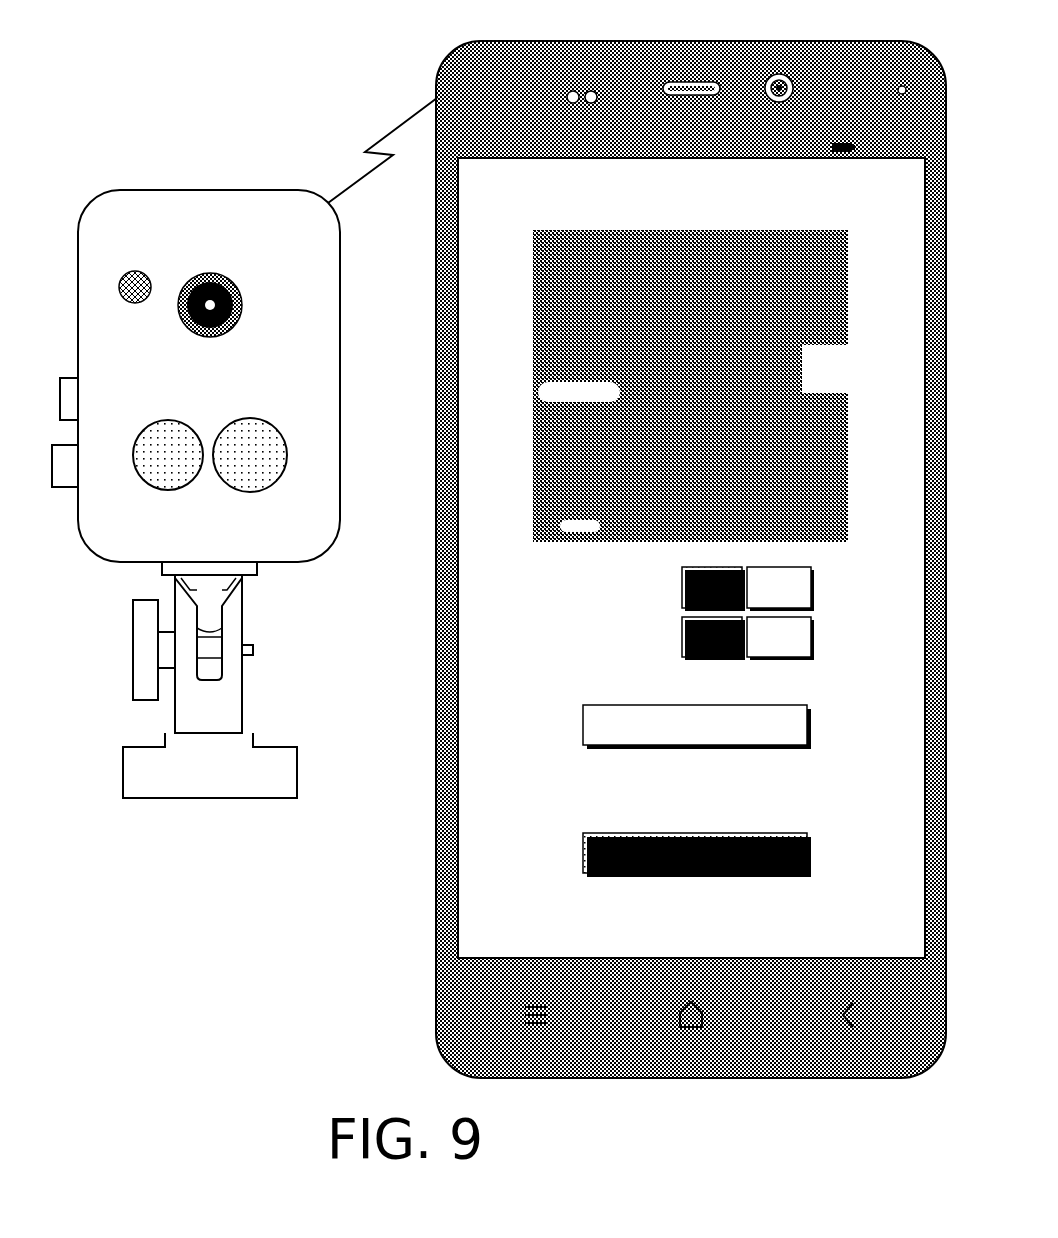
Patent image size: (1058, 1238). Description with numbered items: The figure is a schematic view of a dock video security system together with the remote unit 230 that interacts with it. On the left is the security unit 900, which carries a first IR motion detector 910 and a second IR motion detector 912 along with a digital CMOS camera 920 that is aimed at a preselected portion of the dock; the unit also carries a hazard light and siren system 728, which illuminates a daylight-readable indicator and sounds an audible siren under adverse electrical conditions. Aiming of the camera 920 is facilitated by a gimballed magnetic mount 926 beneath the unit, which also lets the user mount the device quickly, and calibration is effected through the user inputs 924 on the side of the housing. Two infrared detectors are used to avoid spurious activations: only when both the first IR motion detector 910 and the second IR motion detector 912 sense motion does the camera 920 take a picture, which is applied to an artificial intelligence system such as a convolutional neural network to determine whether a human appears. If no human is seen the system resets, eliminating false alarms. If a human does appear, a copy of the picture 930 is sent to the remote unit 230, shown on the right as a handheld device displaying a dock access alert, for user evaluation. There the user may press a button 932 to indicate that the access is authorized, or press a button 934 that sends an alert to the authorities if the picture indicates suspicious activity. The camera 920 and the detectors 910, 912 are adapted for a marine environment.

The remote unit 230 is at (691, 545).
The security unit 900 is at (184, 376).
The hazard light and siren system 728 is at (137, 270).
The digital camera 920 is at (209, 274).
The first IR motion detector 910 is at (170, 420).
The second IR motion detector 912 is at (250, 418).
The user inputs 924 is at (70, 377).
The gimballed magnetic mount 926 is at (243, 631).
The picture 930 is at (541, 544).
The authorized access button 932 is at (811, 722).
The alert button 934 is at (811, 850).